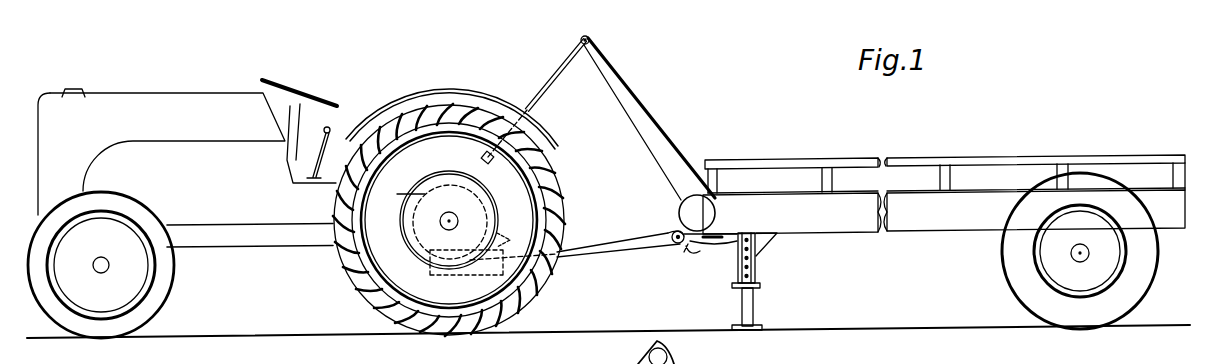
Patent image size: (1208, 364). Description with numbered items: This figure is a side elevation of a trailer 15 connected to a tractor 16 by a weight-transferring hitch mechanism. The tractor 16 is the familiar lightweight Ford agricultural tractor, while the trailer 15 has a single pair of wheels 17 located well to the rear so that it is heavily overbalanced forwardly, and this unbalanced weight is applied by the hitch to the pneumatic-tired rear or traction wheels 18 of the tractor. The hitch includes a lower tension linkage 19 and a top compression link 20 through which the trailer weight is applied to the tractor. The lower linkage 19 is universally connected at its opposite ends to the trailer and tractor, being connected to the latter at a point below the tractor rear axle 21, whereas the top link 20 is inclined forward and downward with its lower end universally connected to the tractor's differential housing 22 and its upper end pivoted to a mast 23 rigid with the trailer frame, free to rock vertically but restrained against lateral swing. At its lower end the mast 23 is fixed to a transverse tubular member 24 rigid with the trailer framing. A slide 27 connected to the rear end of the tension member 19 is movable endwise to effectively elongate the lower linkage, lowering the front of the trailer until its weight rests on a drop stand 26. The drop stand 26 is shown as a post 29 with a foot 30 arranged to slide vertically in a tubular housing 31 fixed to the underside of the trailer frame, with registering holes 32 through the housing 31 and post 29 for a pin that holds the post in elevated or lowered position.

The trailer 15 is at (992, 153).
The tractor 16 is at (192, 86).
The wheels 17 is at (1003, 280).
The rear or traction wheels 18 is at (535, 302).
The lower tension linkage 19 is at (593, 262).
The top compression link 20 is at (553, 61).
The rear axle 21 is at (449, 230).
The differential housing 22 is at (407, 236).
The mast 23 is at (643, 124).
The transverse tubular member 24 is at (718, 222).
The drop stand 26 is at (761, 272).
The slide 27 is at (688, 250).
The post 29 is at (753, 306).
The foot 30 is at (762, 327).
The tubular housing 31 is at (738, 264).
The registering holes 32 is at (738, 250).